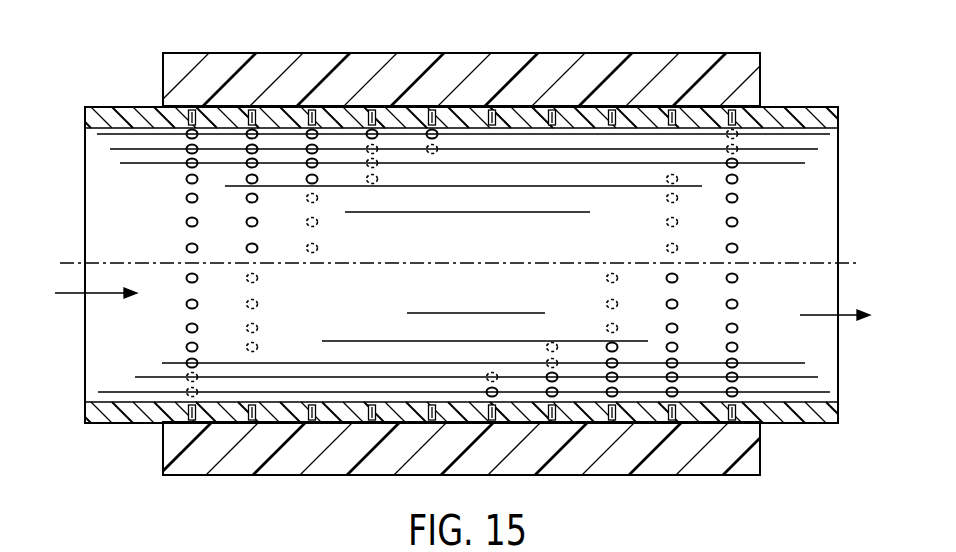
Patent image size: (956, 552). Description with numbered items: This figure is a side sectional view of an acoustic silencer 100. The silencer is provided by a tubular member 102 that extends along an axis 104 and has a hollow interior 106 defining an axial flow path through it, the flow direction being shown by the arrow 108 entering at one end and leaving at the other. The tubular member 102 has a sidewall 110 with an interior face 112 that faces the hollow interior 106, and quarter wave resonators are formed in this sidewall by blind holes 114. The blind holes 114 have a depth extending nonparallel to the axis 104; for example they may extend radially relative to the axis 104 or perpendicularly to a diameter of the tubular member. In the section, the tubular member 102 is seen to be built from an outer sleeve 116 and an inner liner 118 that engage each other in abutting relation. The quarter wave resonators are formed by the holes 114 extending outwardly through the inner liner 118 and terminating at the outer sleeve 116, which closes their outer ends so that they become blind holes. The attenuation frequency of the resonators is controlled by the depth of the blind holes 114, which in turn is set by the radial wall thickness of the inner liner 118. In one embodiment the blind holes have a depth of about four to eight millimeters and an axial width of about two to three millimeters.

The acoustic silencer 100 is at (428, 29).
The tubular member 102 is at (238, 53).
The axis 104 is at (820, 262).
The hollow interior 106 is at (482, 248).
The arrow 108 is at (97, 298).
The sidewall 110 is at (85, 117).
The interior face 112 is at (90, 130).
The blind holes 114 is at (249, 248).
The outer sleeve 116 is at (163, 80).
The inner liner 118 is at (105, 108).